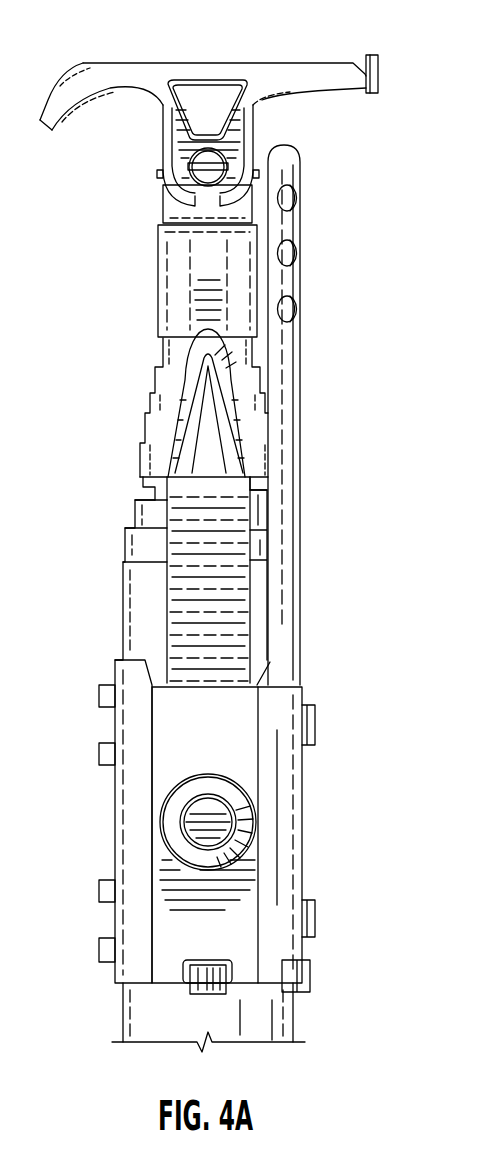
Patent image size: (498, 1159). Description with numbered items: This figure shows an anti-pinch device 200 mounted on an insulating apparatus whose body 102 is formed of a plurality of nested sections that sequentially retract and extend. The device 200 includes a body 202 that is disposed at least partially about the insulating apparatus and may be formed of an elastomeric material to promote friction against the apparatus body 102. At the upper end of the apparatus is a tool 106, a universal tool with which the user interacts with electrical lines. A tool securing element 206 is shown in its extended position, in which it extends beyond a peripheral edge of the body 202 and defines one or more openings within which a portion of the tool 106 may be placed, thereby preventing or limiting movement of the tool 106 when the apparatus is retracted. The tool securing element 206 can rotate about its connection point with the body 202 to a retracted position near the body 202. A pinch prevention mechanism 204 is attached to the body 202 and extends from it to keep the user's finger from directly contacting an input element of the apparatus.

The tool 106 is at (213, 69).
The anti-pinch device 200 is at (351, 690).
The body 202 is at (143, 825).
The pinch prevention mechanism 204 is at (150, 548).
The tool securing element 206 is at (311, 200).
The body 102 is at (273, 1017).